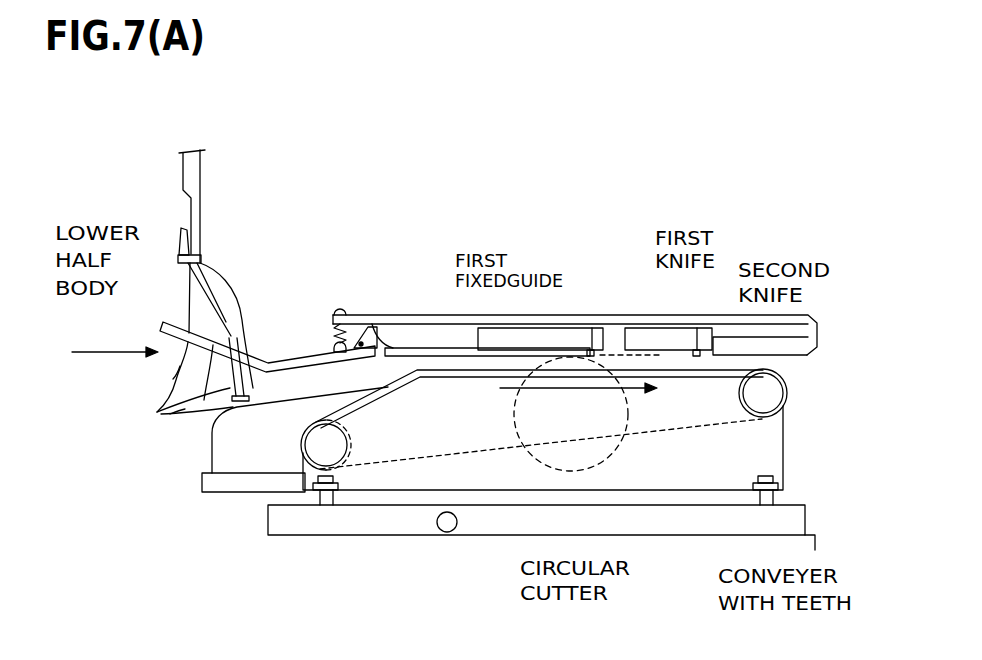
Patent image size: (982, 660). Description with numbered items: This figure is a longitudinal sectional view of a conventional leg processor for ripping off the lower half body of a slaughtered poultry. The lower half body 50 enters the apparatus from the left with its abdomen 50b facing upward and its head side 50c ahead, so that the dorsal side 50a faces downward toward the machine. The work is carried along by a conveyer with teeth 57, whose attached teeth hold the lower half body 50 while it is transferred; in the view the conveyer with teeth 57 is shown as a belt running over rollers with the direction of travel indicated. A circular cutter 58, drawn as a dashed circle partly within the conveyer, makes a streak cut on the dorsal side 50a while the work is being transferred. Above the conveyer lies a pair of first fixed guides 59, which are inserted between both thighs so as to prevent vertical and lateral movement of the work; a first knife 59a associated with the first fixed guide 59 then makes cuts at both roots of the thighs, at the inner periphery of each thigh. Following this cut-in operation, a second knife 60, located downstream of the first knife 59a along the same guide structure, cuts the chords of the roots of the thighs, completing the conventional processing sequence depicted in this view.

The lower half body 50 is at (193, 307).
The dorsal side 50a is at (178, 417).
The abdomen 50b is at (173, 378).
The head side 50c is at (268, 364).
The conveyer with teeth 57 is at (680, 432).
The circular cutter 58 is at (545, 468).
The first fixed guide 59 is at (408, 348).
The first knife 59a is at (588, 328).
The second knife 60 is at (697, 328).